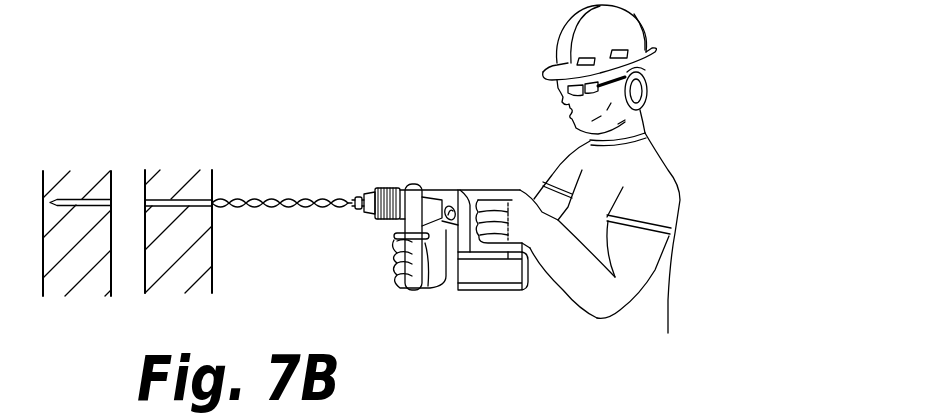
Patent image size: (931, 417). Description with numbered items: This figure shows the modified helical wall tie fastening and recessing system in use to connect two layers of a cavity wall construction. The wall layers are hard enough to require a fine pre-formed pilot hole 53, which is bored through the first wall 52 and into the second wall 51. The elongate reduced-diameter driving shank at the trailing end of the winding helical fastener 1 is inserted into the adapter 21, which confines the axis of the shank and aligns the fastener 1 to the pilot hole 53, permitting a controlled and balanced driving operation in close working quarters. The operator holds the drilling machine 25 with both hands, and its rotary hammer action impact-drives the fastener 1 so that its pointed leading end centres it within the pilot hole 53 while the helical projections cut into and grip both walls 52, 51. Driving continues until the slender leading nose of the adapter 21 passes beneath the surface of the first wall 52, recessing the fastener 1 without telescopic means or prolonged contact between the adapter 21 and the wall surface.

The fastener 1 is at (370, 237).
The adapter 21 is at (355, 215).
The drilling machine 25 is at (494, 293).
The second wall 51 is at (85, 331).
The first wall 52 is at (191, 331).
The pilot hole 53 is at (80, 189).